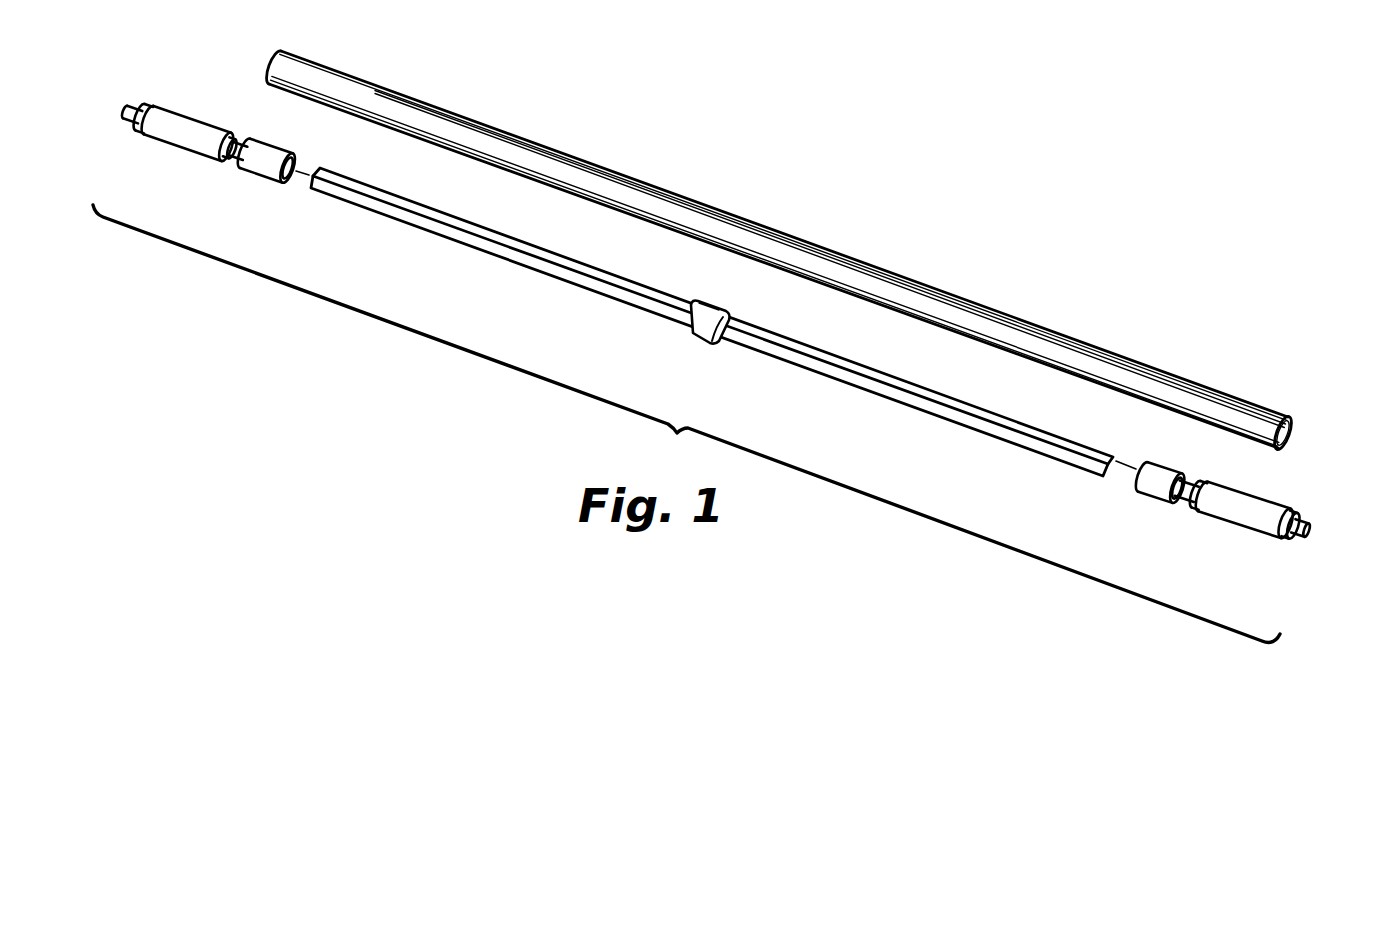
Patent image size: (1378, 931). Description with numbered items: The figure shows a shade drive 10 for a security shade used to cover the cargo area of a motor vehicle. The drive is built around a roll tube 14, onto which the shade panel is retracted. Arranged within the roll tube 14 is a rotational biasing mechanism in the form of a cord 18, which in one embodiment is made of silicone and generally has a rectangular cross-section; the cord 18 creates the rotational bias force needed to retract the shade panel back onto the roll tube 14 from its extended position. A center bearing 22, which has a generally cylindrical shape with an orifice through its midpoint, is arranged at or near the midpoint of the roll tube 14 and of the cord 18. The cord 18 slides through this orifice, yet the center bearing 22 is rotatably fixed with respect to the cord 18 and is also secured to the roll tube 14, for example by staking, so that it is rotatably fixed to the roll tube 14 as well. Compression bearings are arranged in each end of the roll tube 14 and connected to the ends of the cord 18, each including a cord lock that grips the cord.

The shade drive 10 is at (614, 108).
The roll tube 14 is at (794, 237).
The cord 18 is at (1010, 443).
The center bearing 22 is at (705, 337).